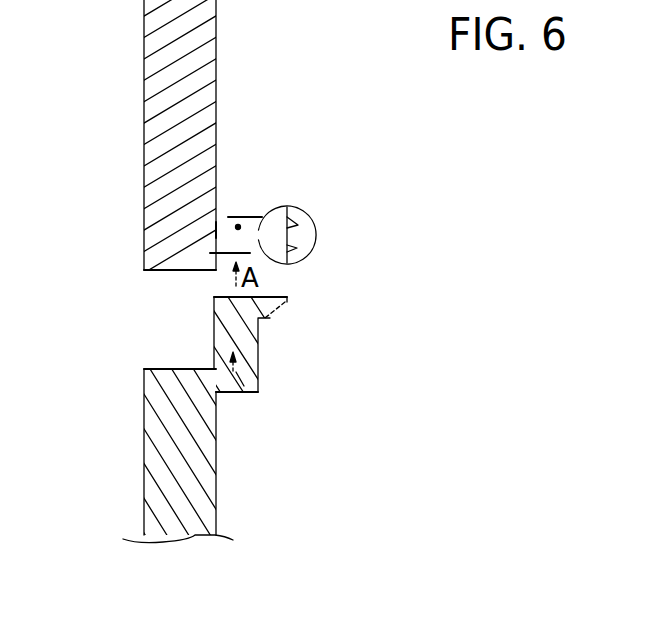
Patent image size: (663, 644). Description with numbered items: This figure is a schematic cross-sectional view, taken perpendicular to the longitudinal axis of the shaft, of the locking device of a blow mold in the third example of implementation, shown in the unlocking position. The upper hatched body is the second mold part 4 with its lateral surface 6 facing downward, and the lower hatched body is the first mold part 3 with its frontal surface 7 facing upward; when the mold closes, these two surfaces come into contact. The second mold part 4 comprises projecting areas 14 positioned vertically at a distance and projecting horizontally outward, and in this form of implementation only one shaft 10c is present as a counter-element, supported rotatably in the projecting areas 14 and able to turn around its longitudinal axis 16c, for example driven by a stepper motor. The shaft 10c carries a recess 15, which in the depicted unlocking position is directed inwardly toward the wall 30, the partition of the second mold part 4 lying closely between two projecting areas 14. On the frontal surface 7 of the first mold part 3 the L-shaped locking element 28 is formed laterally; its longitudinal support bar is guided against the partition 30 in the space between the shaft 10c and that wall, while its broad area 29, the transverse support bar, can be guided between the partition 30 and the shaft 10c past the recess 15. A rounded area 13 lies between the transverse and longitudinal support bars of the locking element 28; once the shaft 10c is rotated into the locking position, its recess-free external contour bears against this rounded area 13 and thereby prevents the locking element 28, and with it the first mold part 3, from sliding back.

The second mold part 4 is at (160, 62).
The wall 30 is at (215, 230).
The lateral surface 6 is at (163, 271).
The projecting area 14 is at (238, 212).
The recess 15 is at (277, 200).
The shaft 10c is at (307, 226).
The longitudinal axis 16c is at (287, 237).
The broad area 29 is at (276, 303).
The rounded area 13 is at (268, 316).
The L-shaped locking element 28 is at (258, 392).
The frontal surface 7 is at (165, 369).
The first mold part 3 is at (155, 460).